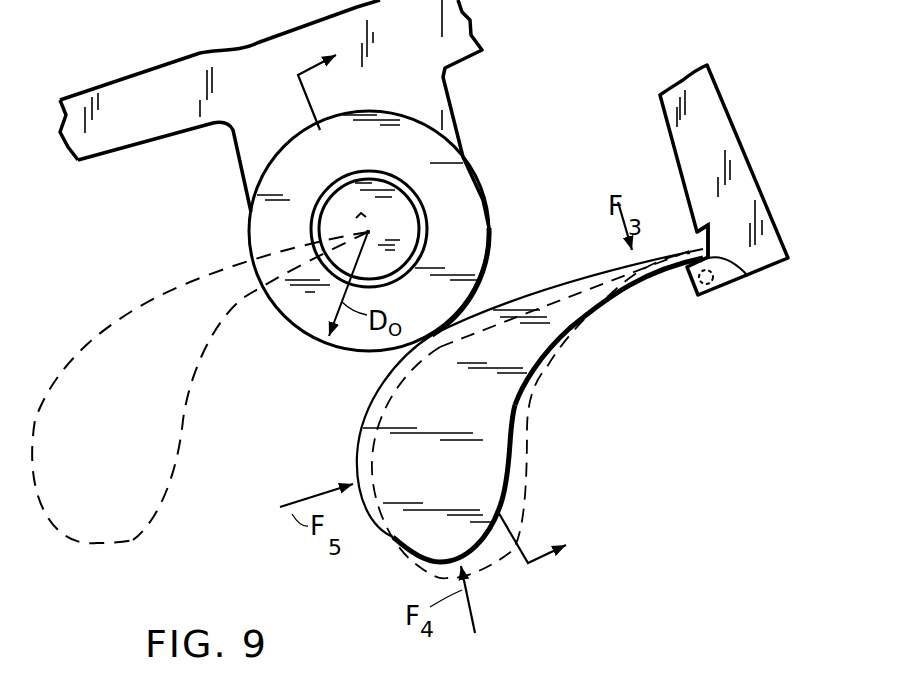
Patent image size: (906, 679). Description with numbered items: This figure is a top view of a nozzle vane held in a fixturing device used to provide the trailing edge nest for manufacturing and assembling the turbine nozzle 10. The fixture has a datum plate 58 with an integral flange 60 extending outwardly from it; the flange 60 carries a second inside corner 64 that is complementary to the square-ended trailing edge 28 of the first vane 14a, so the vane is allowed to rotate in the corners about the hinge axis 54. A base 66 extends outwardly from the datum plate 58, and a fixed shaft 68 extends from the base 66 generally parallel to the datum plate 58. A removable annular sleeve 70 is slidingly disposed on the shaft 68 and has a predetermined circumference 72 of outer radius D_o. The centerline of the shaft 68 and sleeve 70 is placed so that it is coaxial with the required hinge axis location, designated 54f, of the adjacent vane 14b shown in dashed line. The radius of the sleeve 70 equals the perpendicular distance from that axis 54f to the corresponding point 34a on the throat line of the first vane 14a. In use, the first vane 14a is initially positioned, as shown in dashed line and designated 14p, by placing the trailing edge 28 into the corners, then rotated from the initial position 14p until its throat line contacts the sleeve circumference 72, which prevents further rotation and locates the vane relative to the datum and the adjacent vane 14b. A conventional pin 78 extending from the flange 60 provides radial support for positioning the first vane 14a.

The turbine nozzle 10 is at (414, 324).
The first vane 14a is at (365, 517).
The adjacent vane 14b is at (130, 542).
The initial position 14p is at (522, 443).
The trailing edge 28 is at (698, 252).
The point on throat line 34a is at (427, 337).
The hinge axis 54 is at (663, 272).
The fixture hinge axis 54f is at (366, 232).
The datum plate 58 is at (130, 148).
The flange 60 is at (727, 100).
The second inside corner 64 is at (744, 274).
The base 66 is at (230, 152).
The fixed shaft 68 is at (412, 225).
The annular sleeve 70 is at (470, 206).
The circumference 72 is at (484, 267).
The pin 78 is at (715, 284).